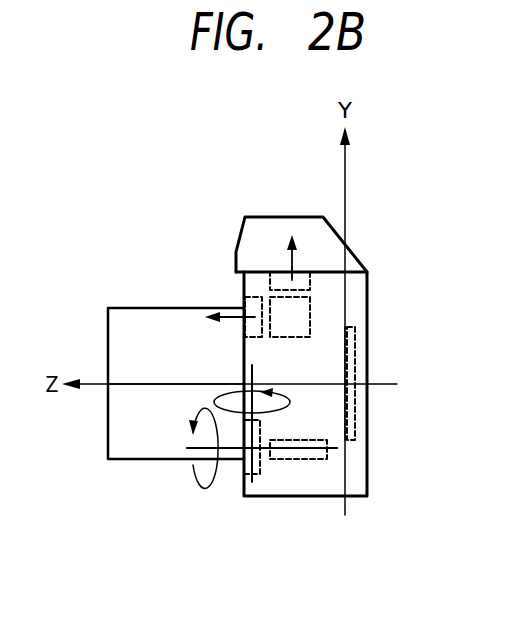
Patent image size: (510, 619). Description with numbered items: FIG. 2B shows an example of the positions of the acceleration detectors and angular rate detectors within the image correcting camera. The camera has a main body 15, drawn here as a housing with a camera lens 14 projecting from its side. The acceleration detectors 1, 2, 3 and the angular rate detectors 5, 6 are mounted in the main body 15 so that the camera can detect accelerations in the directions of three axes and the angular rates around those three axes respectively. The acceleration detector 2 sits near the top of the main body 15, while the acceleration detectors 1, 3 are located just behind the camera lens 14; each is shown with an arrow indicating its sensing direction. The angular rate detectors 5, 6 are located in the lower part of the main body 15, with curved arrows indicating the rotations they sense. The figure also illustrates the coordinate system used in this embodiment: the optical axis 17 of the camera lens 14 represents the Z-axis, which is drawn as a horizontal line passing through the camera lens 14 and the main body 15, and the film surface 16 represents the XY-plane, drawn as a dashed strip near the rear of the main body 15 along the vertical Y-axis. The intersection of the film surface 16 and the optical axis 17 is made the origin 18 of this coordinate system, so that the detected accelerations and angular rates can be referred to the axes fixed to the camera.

The acceleration detector 1 is at (268, 296).
The acceleration detector 2 is at (278, 271).
The acceleration detector 3 is at (245, 300).
The angular rate detector 5 is at (256, 470).
The angular rate detector 6 is at (314, 460).
The camera lens 14 is at (134, 462).
The main body 15 is at (278, 497).
The film surface 16 is at (349, 424).
The optical axis 17 is at (131, 383).
The origin 18 is at (348, 381).